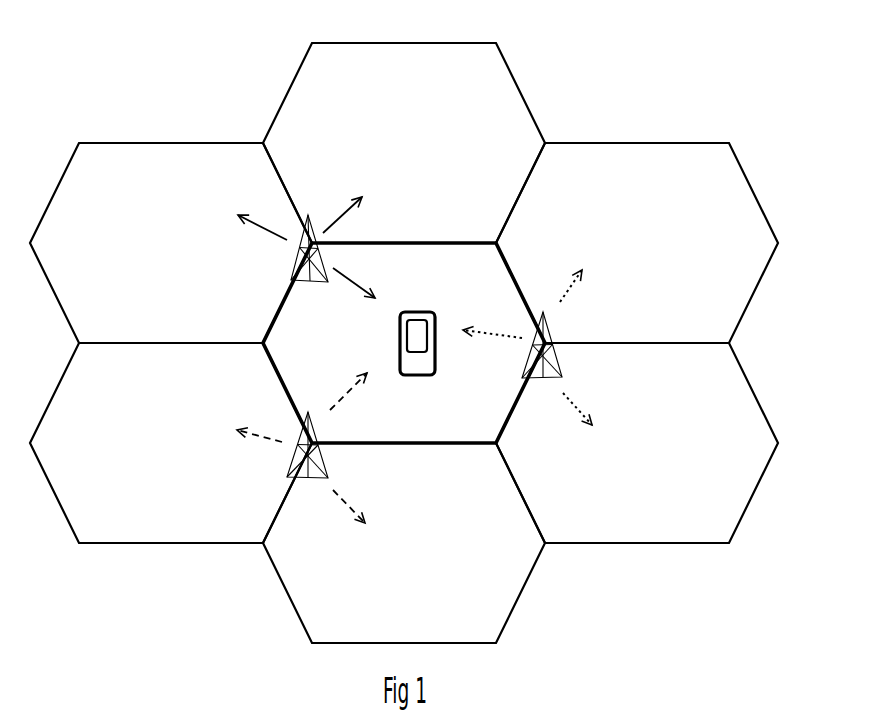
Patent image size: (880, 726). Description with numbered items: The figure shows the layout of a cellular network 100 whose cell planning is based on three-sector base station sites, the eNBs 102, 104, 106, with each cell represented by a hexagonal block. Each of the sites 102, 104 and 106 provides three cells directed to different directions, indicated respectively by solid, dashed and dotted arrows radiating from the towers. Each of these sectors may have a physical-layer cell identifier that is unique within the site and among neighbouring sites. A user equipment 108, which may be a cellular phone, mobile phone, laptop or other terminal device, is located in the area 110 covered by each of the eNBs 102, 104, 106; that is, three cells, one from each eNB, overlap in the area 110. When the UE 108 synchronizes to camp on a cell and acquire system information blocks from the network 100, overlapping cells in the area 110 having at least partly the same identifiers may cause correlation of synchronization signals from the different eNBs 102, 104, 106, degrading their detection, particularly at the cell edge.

The cellular network 100 is at (693, 98).
The eNB 102 is at (290, 265).
The eNB 104 is at (290, 470).
The eNB 106 is at (565, 375).
The user equipment 108 is at (413, 375).
The area 110 is at (454, 286).